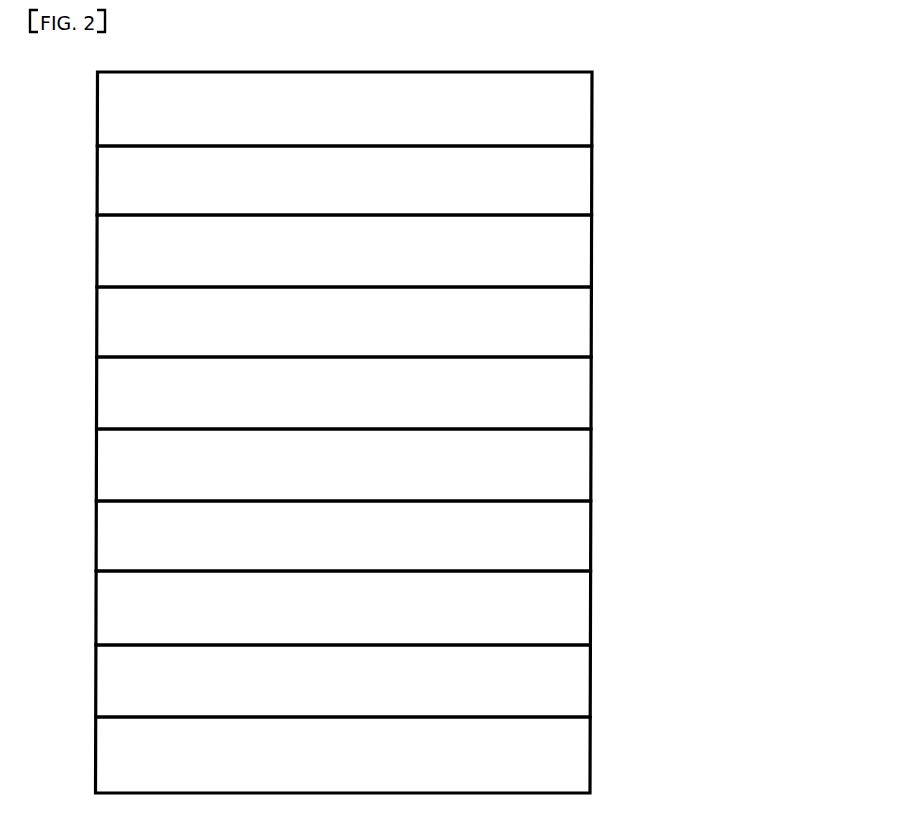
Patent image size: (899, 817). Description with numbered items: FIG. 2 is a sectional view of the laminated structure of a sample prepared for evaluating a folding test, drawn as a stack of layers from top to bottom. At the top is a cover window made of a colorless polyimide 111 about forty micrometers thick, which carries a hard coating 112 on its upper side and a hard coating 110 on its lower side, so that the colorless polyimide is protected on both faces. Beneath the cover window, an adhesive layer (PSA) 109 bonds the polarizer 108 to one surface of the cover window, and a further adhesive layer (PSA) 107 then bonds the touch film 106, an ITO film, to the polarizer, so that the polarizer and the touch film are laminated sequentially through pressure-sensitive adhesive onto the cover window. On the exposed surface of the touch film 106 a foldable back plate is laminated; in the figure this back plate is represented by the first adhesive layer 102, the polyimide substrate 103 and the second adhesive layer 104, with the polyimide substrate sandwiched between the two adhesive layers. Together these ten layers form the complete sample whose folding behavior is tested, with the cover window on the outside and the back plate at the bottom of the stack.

The hard coating 112 is at (630, 109).
The colorless polyimide 111 is at (635, 187).
The hard coating 110 is at (629, 261).
The adhesive layer (PSA) 109 is at (629, 330).
The polarizer 108 is at (627, 399).
The adhesive layer (PSA) 107 is at (625, 474).
The touch film 106 is at (625, 543).
The first adhesive layer 102 is at (625, 617).
The polyimide substrate 103 is at (629, 694).
The second adhesive layer 104 is at (630, 760).